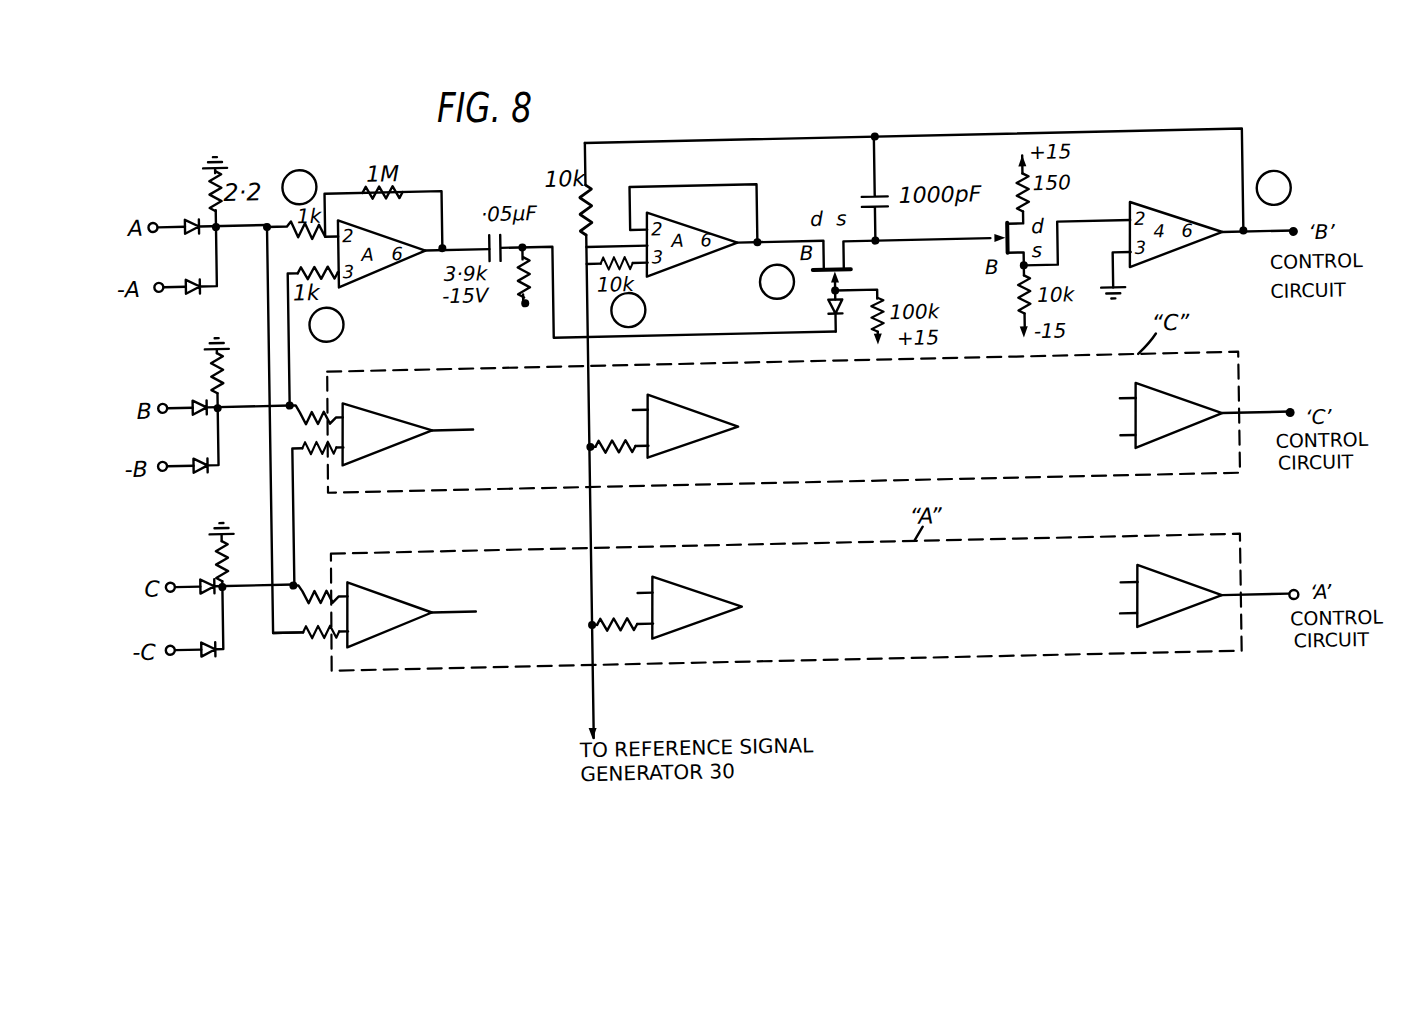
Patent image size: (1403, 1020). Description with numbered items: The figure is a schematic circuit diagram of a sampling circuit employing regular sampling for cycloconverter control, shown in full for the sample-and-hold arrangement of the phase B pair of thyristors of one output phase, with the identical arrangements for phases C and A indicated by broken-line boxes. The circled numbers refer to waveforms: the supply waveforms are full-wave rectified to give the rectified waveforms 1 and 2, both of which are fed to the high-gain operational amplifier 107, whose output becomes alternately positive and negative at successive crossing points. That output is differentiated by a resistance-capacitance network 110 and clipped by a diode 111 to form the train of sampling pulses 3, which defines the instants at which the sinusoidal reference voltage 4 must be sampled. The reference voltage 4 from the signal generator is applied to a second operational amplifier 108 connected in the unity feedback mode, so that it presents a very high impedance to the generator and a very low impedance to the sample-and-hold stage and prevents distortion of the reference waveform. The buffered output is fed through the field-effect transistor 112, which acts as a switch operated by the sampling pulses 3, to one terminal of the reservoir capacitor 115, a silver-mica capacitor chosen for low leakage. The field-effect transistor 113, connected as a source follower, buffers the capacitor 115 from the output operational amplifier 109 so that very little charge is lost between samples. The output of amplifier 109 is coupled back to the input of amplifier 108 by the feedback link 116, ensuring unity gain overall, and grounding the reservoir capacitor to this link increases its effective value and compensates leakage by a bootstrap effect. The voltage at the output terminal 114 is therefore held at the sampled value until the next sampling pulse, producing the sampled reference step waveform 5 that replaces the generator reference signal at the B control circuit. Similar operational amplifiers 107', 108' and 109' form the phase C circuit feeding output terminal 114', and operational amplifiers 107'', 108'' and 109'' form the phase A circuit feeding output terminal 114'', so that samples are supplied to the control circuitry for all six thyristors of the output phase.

The high-gain operational amplifier 107 is at (378, 295).
The second operational amplifier 108 is at (727, 230).
The output operational amplifier 109 is at (1197, 239).
The resistance-capacitance network 110 is at (520, 249).
The diode 111 is at (827, 314).
The field-effect transistor 112 is at (851, 285).
The field-effect transistor 113 is at (1004, 244).
The output terminal 114 is at (1316, 213).
The reservoir capacitor 115 is at (867, 209).
The feedback link 116 is at (848, 149).
The operational amplifier 107' is at (382, 484).
The operational amplifier 108' is at (680, 416).
The operational amplifier 109' is at (1204, 409).
The output terminal 114' is at (1312, 393).
The operational amplifier 107'' is at (374, 610).
The operational amplifier 108'' is at (690, 594).
The operational amplifier 109'' is at (1204, 587).
The output terminal 114'' is at (1324, 573).
The rectified waveform 1 is at (281, 222).
The rectified waveform 2 is at (287, 338).
The sampling pulse waveform 3 is at (832, 291).
The reference voltage waveform 4 is at (587, 308).
The sampled reference step waveform 5 is at (1273, 199).